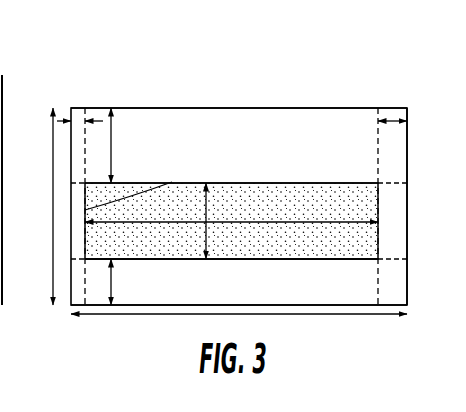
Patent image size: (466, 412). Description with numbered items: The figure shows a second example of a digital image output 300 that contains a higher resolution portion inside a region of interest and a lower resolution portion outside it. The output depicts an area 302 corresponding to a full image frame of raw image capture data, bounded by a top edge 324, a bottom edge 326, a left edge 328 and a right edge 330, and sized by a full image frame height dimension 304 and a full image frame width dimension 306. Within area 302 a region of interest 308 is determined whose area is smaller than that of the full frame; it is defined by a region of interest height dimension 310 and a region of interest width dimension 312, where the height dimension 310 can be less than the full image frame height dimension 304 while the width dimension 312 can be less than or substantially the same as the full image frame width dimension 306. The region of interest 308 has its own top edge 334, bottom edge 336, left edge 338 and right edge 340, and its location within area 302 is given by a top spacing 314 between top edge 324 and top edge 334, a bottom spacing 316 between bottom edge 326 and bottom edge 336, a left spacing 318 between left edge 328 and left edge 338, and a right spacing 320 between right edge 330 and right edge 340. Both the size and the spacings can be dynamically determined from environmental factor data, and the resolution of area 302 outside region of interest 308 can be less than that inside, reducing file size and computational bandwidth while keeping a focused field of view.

The digital image output 300 is at (291, 97).
The area 302 is at (298, 165).
The full image frame height dimension 304 is at (53, 182).
The full image frame width dimension 306 is at (340, 316).
The region of interest 308 is at (367, 214).
The region of interest height dimension 310 is at (208, 221).
The region of interest width dimension 312 is at (276, 223).
The top spacing 314 is at (112, 150).
The bottom spacing 316 is at (112, 277).
The left spacing 318 is at (59, 120).
The right spacing 320 is at (388, 118).
The top edge 324 is at (202, 108).
The bottom edge 326 is at (238, 305).
The left edge 328 is at (71, 161).
The right edge 330 is at (407, 148).
The top edge 334 is at (263, 183).
The bottom edge 336 is at (260, 259).
The left edge 338 is at (137, 182).
The right edge 340 is at (378, 212).